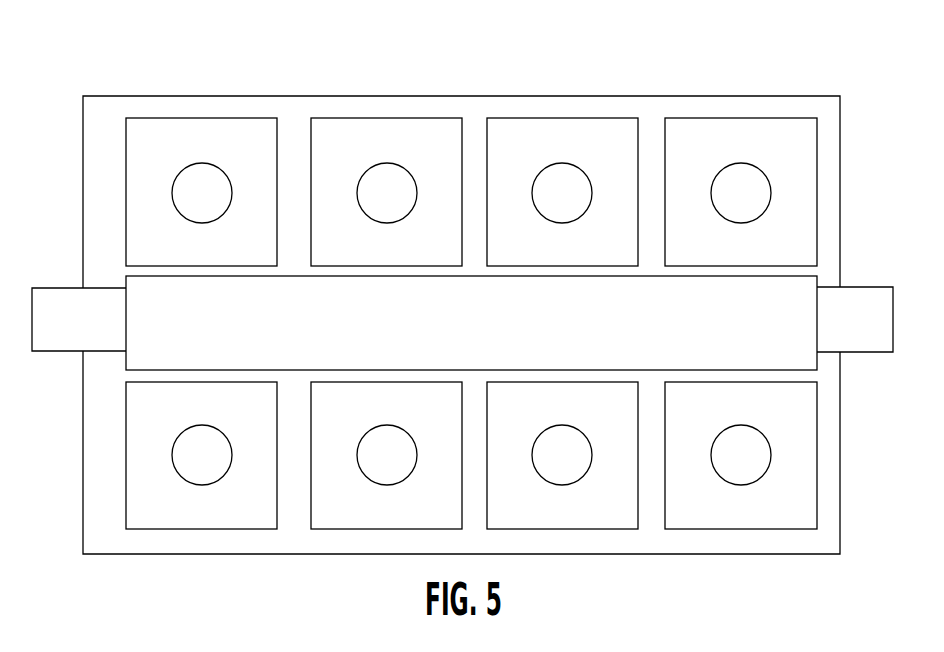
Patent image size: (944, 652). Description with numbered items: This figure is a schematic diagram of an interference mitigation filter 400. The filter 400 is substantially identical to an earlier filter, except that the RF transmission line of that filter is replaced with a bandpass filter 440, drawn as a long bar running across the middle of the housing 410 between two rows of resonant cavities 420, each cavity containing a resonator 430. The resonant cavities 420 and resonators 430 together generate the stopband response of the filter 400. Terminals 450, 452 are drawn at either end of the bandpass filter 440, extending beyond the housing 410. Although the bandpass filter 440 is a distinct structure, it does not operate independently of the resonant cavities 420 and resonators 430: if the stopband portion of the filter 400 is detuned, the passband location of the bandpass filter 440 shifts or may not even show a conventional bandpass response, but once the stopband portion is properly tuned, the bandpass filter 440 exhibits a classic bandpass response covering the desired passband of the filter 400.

The interference mitigation filter 400 is at (180, 78).
The housing 410 is at (749, 105).
The resonant cavities 420 is at (337, 130).
The resonators 430 is at (566, 172).
The bandpass filter 440 is at (490, 332).
The first module terminal 450 is at (50, 300).
The second module terminal 452 is at (866, 298).